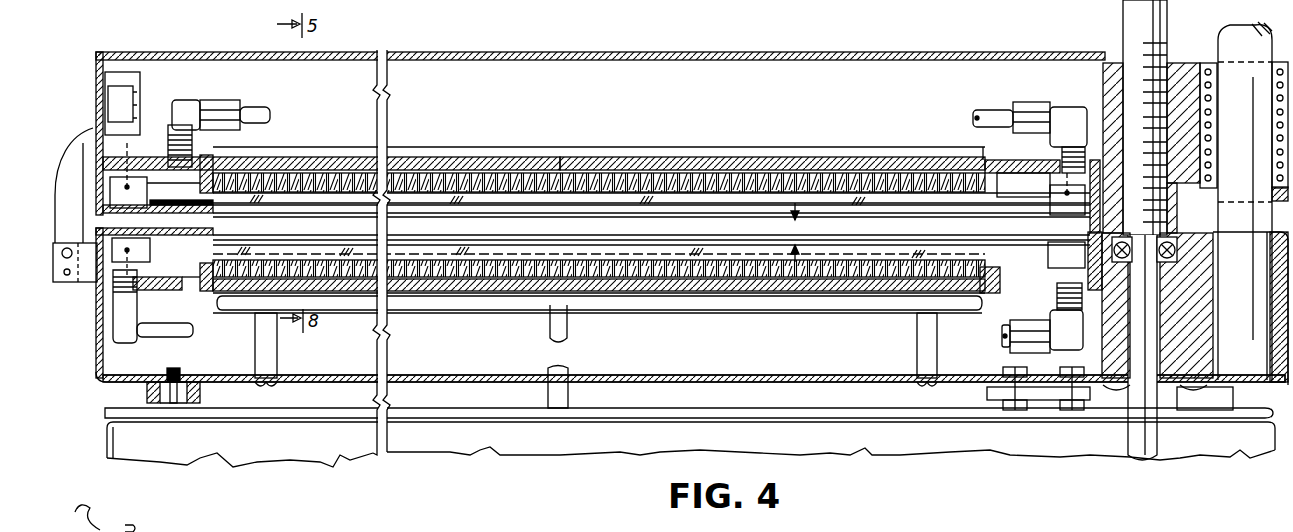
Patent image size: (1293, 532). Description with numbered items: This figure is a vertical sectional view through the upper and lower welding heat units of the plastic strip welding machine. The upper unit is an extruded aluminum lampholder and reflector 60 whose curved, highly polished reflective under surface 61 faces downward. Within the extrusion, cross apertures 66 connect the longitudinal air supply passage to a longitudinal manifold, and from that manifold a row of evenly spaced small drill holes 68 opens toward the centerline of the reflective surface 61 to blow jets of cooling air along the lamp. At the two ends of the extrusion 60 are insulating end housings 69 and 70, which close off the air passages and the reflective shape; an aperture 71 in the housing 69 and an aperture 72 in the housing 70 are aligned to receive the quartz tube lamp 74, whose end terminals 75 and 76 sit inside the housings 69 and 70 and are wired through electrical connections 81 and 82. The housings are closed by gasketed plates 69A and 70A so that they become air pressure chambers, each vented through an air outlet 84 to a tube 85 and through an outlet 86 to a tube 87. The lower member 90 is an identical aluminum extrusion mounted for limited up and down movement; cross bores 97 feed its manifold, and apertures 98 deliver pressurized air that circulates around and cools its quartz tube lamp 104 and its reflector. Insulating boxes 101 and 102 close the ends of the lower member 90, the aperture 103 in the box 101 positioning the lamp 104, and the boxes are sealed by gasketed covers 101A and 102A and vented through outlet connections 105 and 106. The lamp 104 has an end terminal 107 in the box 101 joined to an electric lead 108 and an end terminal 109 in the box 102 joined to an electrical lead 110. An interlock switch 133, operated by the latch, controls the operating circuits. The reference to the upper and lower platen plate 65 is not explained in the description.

The extruded aluminum lampholder and reflector 60 is at (97, 103).
The curved reflective under surface 61 is at (72, 200).
The upper platen plate 65 is at (873, 157).
The cross apertures 66 is at (415, 175).
The small drill holes 68 is at (259, 187).
The end housing 69 is at (145, 157).
The gasketed plate 69A is at (100, 172).
The end housing 70 is at (1003, 167).
The gasketed plate 70A is at (1070, 185).
The aperture 71 is at (200, 182).
The aperture 72 is at (992, 193).
The quartz tube lamp 74 is at (667, 162).
The end terminal 75 is at (138, 208).
The end terminal 76 is at (1078, 213).
The electrical connection 81 is at (119, 161).
The electrical connection 82 is at (1095, 167).
The air outlet 84 is at (197, 102).
The tube 85 is at (272, 117).
The outlet 86 is at (1073, 137).
The tube 87 is at (984, 118).
The lower member 90 is at (360, 292).
The cross bores 97 is at (420, 278).
The apertures 98 is at (633, 277).
The insulating box 101 is at (140, 286).
The gasketed cover 101A is at (127, 250).
The insulating box 102 is at (1043, 268).
The gasketed cover 102A is at (1138, 280).
The aperture 103 is at (213, 238).
The quartz tube lamp 104 is at (733, 252).
The outlet connection 105 is at (127, 310).
The outlet connection 106 is at (1071, 328).
The end terminal 107 is at (144, 250).
The electric lead 108 is at (140, 265).
The end terminal 109 is at (1050, 258).
The electrical lead 110 is at (1070, 258).
The interlock switch 133 is at (122, 88).